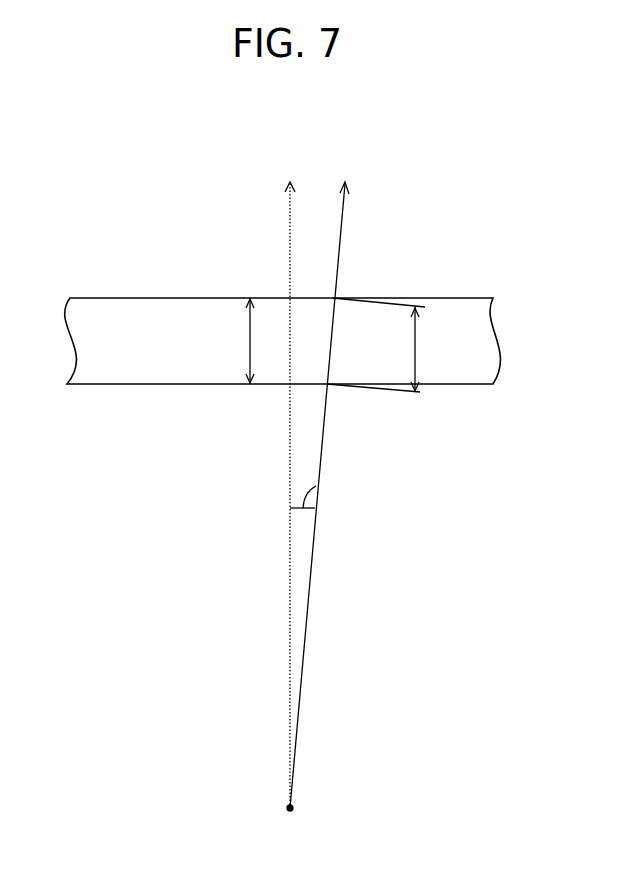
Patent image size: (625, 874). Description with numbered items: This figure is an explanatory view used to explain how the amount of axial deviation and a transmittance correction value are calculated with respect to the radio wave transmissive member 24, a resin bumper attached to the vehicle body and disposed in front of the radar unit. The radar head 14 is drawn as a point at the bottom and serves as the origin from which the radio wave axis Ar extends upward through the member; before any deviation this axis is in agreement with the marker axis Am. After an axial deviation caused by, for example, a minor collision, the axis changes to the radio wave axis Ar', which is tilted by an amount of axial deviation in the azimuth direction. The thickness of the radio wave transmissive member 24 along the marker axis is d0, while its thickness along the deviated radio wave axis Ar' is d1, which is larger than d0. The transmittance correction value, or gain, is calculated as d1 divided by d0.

The radio wave transmissive member 24 is at (195, 297).
The radar head 14 is at (293, 811).
The thickness on the marker axis d0 is at (237, 341).
The thickness on the radio wave axis after axial deviation d1 is at (385, 345).
The radio wave axis Ar is at (288, 482).
The radio wave axis after axial deviation Ar' is at (328, 482).